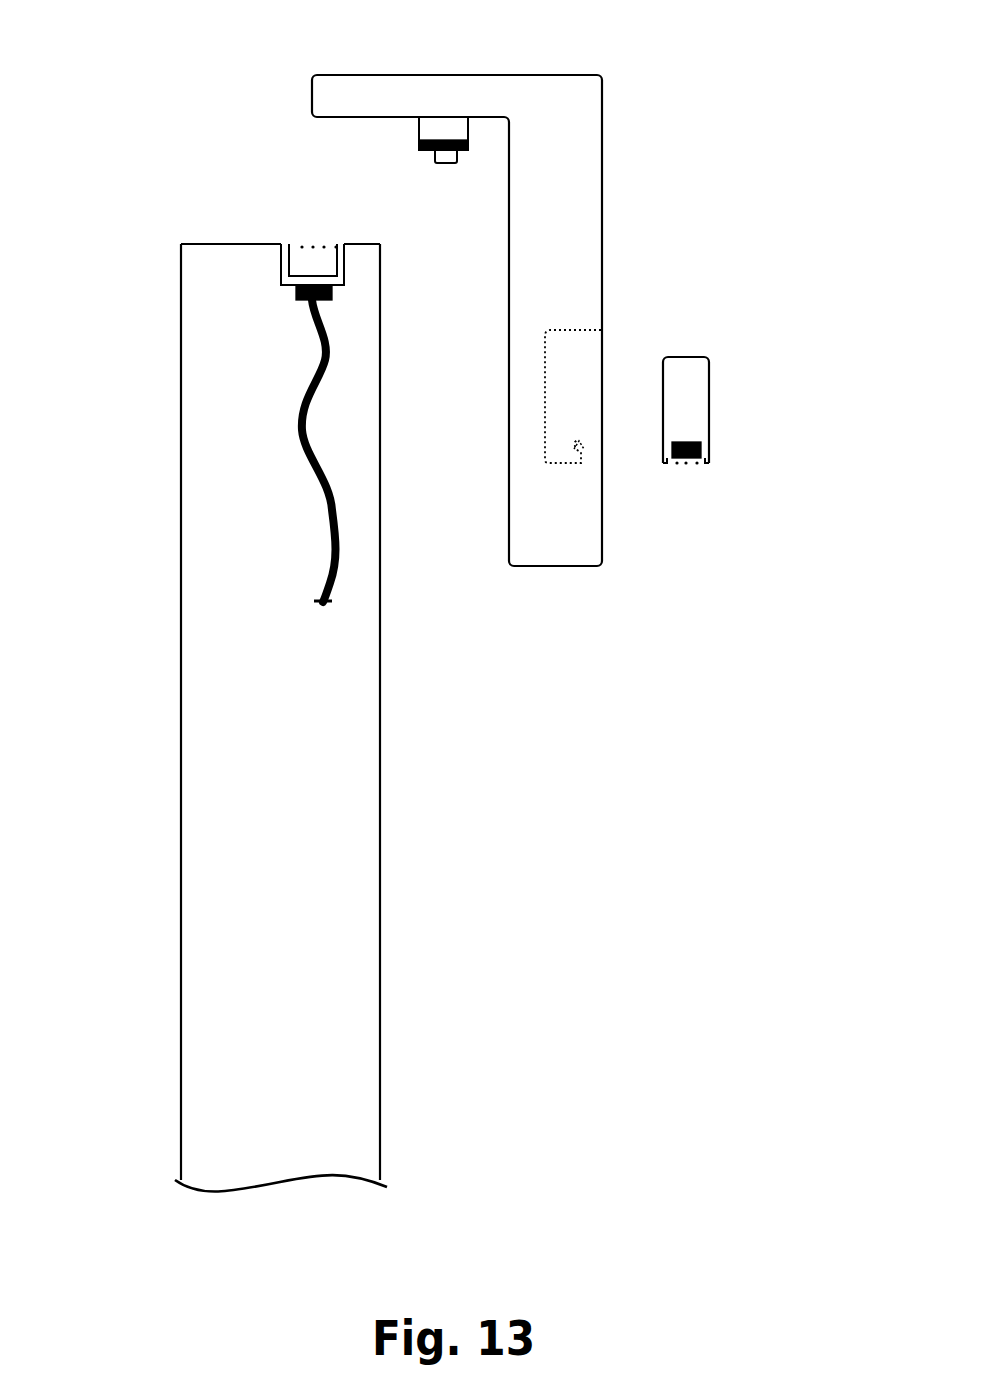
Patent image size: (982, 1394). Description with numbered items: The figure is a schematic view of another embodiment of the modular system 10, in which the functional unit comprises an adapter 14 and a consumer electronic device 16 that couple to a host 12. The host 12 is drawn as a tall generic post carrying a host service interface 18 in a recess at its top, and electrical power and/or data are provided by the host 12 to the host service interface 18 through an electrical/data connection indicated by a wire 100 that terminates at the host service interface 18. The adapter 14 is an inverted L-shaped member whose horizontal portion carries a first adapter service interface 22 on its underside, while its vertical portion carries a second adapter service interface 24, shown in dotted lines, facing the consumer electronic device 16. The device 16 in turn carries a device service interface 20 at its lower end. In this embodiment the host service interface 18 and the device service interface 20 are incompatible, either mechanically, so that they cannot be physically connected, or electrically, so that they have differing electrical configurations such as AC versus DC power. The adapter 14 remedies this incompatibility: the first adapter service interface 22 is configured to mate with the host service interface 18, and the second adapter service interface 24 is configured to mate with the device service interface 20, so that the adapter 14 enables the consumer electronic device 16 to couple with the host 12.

The modular system 10 is at (124, 96).
The host 12 is at (181, 503).
The adapter 14 is at (529, 73).
The consumer electronic device 16 is at (686, 357).
The host service interface 18 is at (302, 243).
The device service interface 20 is at (687, 466).
The first adapter service interface 22 is at (419, 141).
The second adapter service interface 24 is at (587, 452).
The wire 100 is at (330, 497).